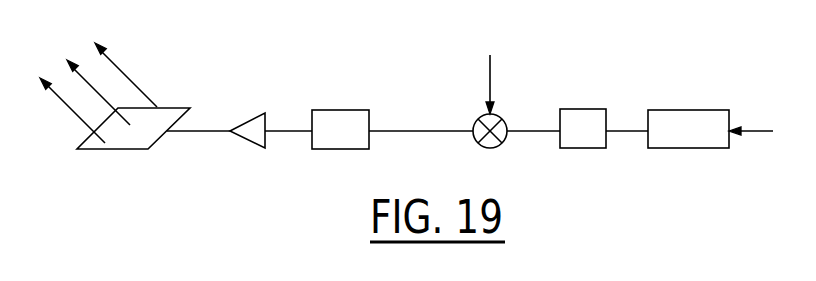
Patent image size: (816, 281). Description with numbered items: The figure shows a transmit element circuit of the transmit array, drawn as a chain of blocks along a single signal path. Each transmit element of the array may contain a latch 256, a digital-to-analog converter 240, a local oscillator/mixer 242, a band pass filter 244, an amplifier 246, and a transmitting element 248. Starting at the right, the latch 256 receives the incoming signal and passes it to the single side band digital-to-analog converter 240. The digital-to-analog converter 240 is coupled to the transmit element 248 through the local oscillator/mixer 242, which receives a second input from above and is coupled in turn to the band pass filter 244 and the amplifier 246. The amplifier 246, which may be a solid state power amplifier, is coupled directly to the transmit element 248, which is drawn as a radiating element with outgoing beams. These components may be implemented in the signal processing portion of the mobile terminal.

The transmit element 248 is at (115, 76).
The amplifier 246 is at (241, 130).
The band pass filter 244 is at (348, 110).
The local oscillator/mixer 242 is at (502, 110).
The single side band digital-to-analog converter 240 is at (577, 109).
The latch 256 is at (688, 110).